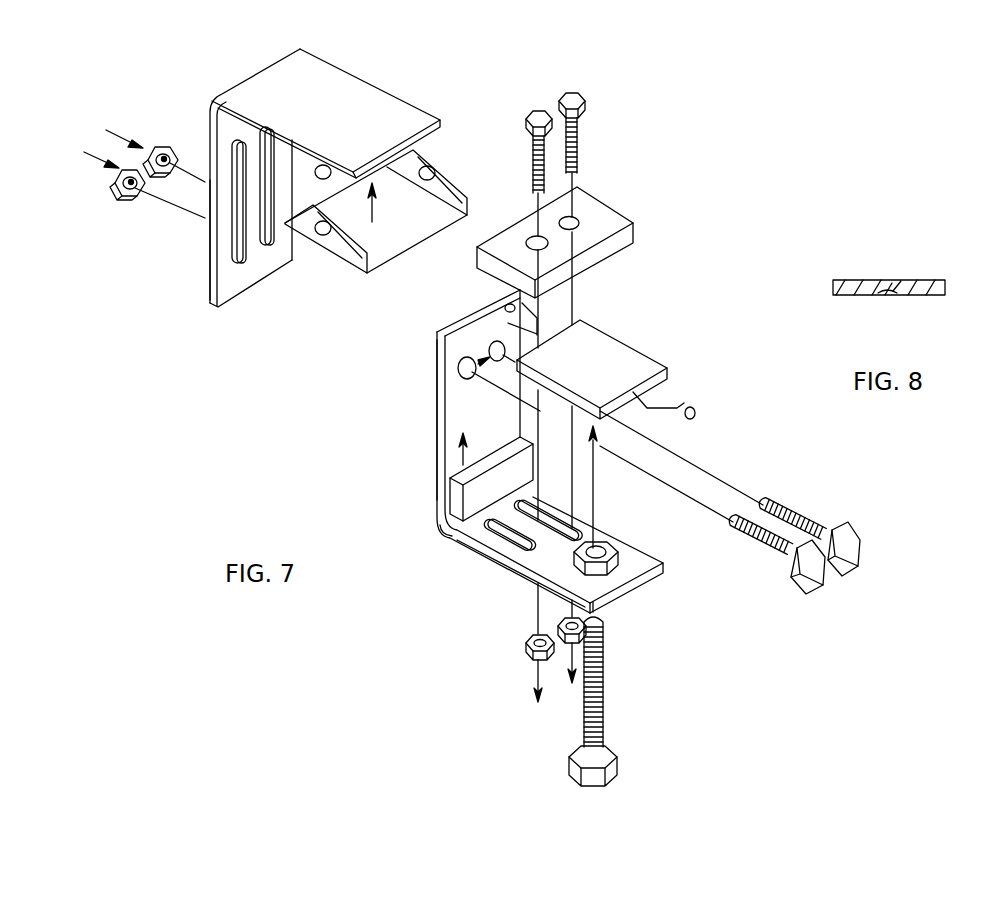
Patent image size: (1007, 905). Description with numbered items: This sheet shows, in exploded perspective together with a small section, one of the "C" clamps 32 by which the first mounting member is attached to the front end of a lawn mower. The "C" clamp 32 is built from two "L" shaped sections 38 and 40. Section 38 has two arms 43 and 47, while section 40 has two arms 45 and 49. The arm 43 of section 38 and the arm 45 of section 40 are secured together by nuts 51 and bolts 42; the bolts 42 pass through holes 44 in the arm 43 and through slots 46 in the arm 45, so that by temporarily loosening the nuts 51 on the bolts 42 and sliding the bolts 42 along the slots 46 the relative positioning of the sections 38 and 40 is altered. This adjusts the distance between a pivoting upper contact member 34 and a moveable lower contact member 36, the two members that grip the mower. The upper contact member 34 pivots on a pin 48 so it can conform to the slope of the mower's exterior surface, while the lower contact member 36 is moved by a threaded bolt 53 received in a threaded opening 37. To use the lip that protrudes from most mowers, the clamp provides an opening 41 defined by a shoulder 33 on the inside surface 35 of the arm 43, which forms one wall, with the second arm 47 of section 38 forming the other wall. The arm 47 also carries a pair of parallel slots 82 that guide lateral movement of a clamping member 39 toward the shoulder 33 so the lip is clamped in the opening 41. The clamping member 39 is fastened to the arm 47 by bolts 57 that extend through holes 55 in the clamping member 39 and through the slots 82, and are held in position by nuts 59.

In FIG. 8, the "C" clamp 32 is at (876, 202).
In FIG. 7, the shoulder 33 is at (455, 508).
In FIG. 7, the upper contact member 34 is at (440, 168).
In FIG. 7, the inside surface 35 is at (450, 493).
In FIG. 7, the lower contact member 36 is at (613, 353).
In FIG. 7, the threaded opening 37 is at (610, 548).
In FIG. 7, the "L" shaped section 38 is at (435, 393).
In FIG. 7, the clamping member 39 is at (598, 217).
In FIG. 7, the "L" shaped section 40 is at (195, 234).
In FIG. 7, the opening 41 is at (460, 527).
In FIG. 7, the bolts 42 is at (815, 568).
In FIG. 7, the arm 43 is at (440, 462).
In FIG. 7, the holes 44 is at (457, 378).
In FIG. 7, the arm 45 is at (210, 252).
In FIG. 7, the slots 46 is at (262, 258).
In FIG. 7, the arm 47 is at (540, 580).
In FIG. 7, the pin 48 is at (320, 168).
In FIG. 7, the arm 49 is at (365, 90).
In FIG. 7, the nuts 51 is at (160, 143).
In FIG. 7, the threaded bolt 53 is at (603, 710).
In FIG. 7, the holes 55 is at (556, 229).
In FIG. 7, the bolts 57 is at (573, 96).
In FIG. 7, the nuts 59 is at (562, 638).
In FIG. 7, the parallel slots 82 is at (527, 523).